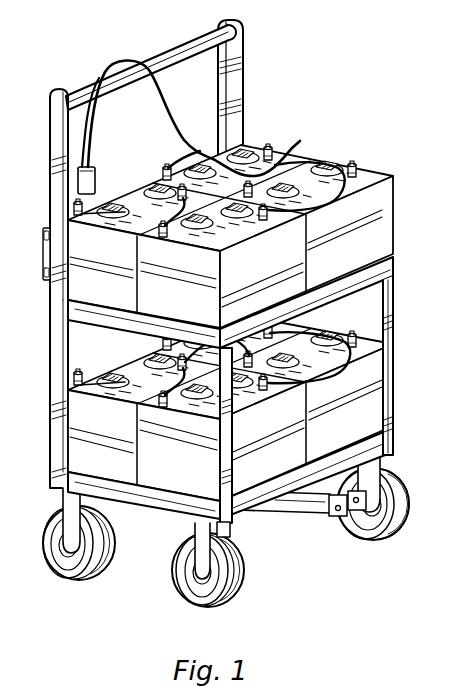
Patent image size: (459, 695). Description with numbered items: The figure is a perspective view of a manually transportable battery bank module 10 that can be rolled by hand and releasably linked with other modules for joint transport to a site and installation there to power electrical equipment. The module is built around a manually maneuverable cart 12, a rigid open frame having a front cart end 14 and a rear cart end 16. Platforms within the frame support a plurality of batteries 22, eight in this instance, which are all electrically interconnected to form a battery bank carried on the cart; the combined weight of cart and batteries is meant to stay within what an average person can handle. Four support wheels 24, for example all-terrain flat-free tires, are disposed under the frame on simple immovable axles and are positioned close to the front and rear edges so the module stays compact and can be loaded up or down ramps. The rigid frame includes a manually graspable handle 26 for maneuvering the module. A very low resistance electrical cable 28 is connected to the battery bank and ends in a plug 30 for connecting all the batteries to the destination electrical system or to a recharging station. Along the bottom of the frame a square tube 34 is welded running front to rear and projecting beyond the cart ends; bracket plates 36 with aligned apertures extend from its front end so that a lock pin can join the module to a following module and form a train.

The battery bank module 10 is at (49, 329).
The cart 12 is at (53, 425).
The front cart end 14 is at (232, 513).
The rear cart end 16 is at (51, 130).
The batteries 22 is at (288, 160).
The support wheels 24 is at (70, 570).
The handle 26 is at (168, 53).
The electrical cable 28 is at (169, 104).
The plug 30 is at (97, 168).
The square tube 34 is at (303, 502).
The bracket plates 36 is at (337, 517).